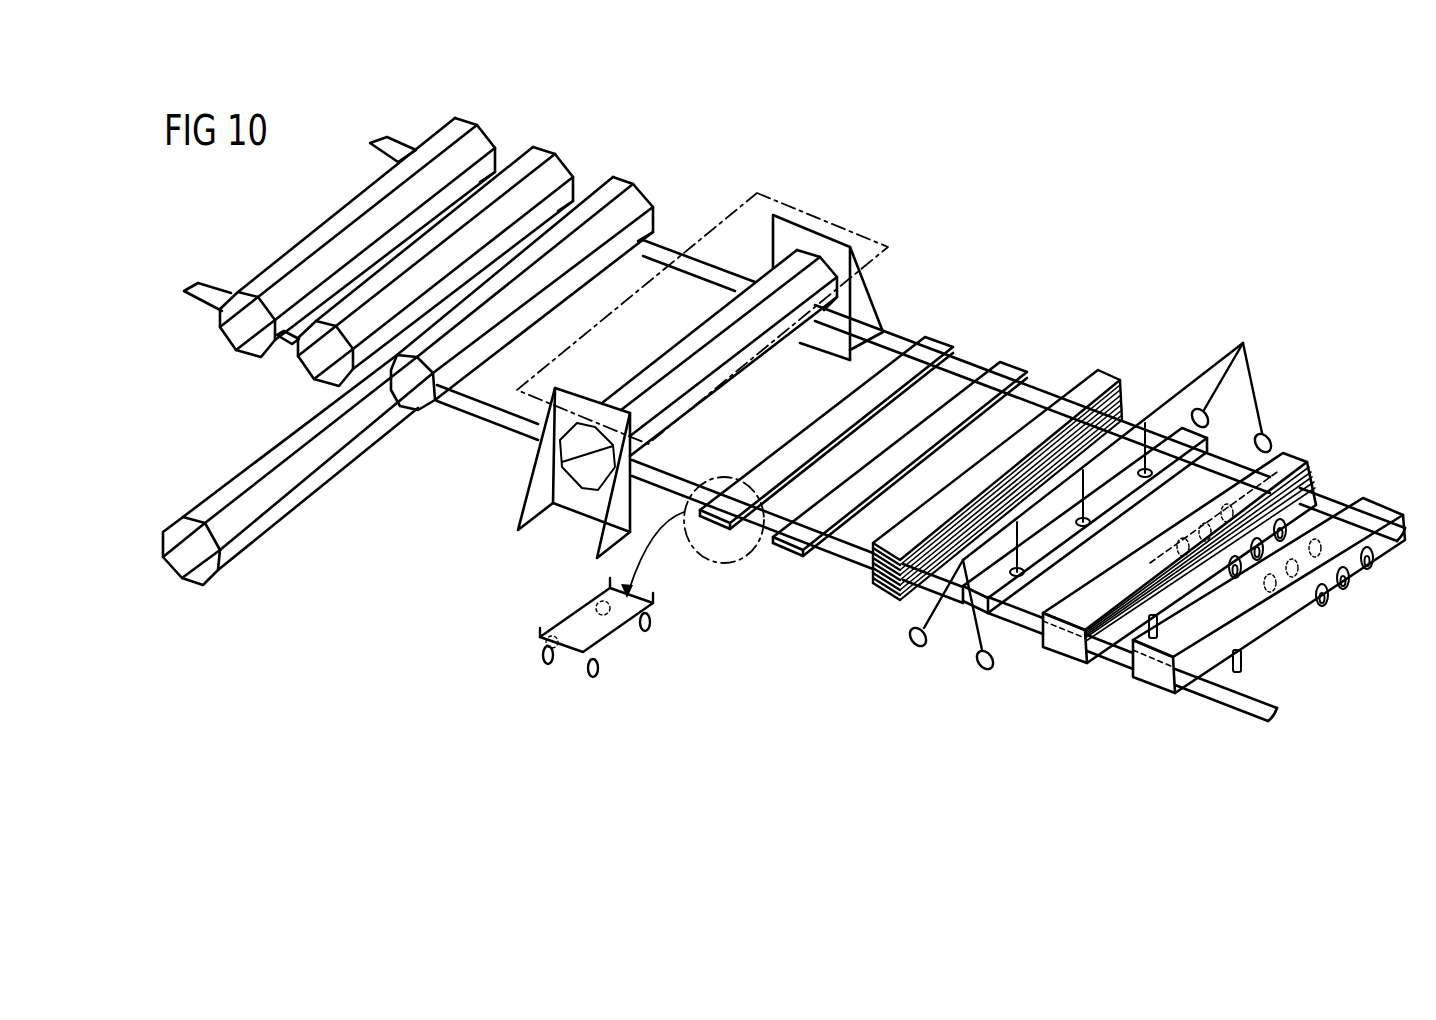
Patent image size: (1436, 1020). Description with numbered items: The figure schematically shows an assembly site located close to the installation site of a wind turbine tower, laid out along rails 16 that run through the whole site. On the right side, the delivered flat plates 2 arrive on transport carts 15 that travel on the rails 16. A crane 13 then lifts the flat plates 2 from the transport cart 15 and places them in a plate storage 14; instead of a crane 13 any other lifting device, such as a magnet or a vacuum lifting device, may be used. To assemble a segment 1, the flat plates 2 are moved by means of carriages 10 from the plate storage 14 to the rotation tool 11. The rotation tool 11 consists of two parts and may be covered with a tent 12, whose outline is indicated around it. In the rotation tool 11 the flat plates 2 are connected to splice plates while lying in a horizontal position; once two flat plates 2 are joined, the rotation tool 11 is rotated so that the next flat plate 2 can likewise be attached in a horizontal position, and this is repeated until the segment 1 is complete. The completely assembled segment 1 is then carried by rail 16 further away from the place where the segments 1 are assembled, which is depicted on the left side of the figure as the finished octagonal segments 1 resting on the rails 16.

The segment 1 is at (343, 208).
The flat plate 2 is at (933, 348).
The carriage 10 is at (582, 623).
The rotation tool 11 is at (813, 238).
The tent 12 is at (745, 217).
The crane 13 is at (1252, 382).
The plate storage 14 is at (1105, 378).
The transport cart 15 is at (1183, 590).
The rail 16 is at (1327, 510).